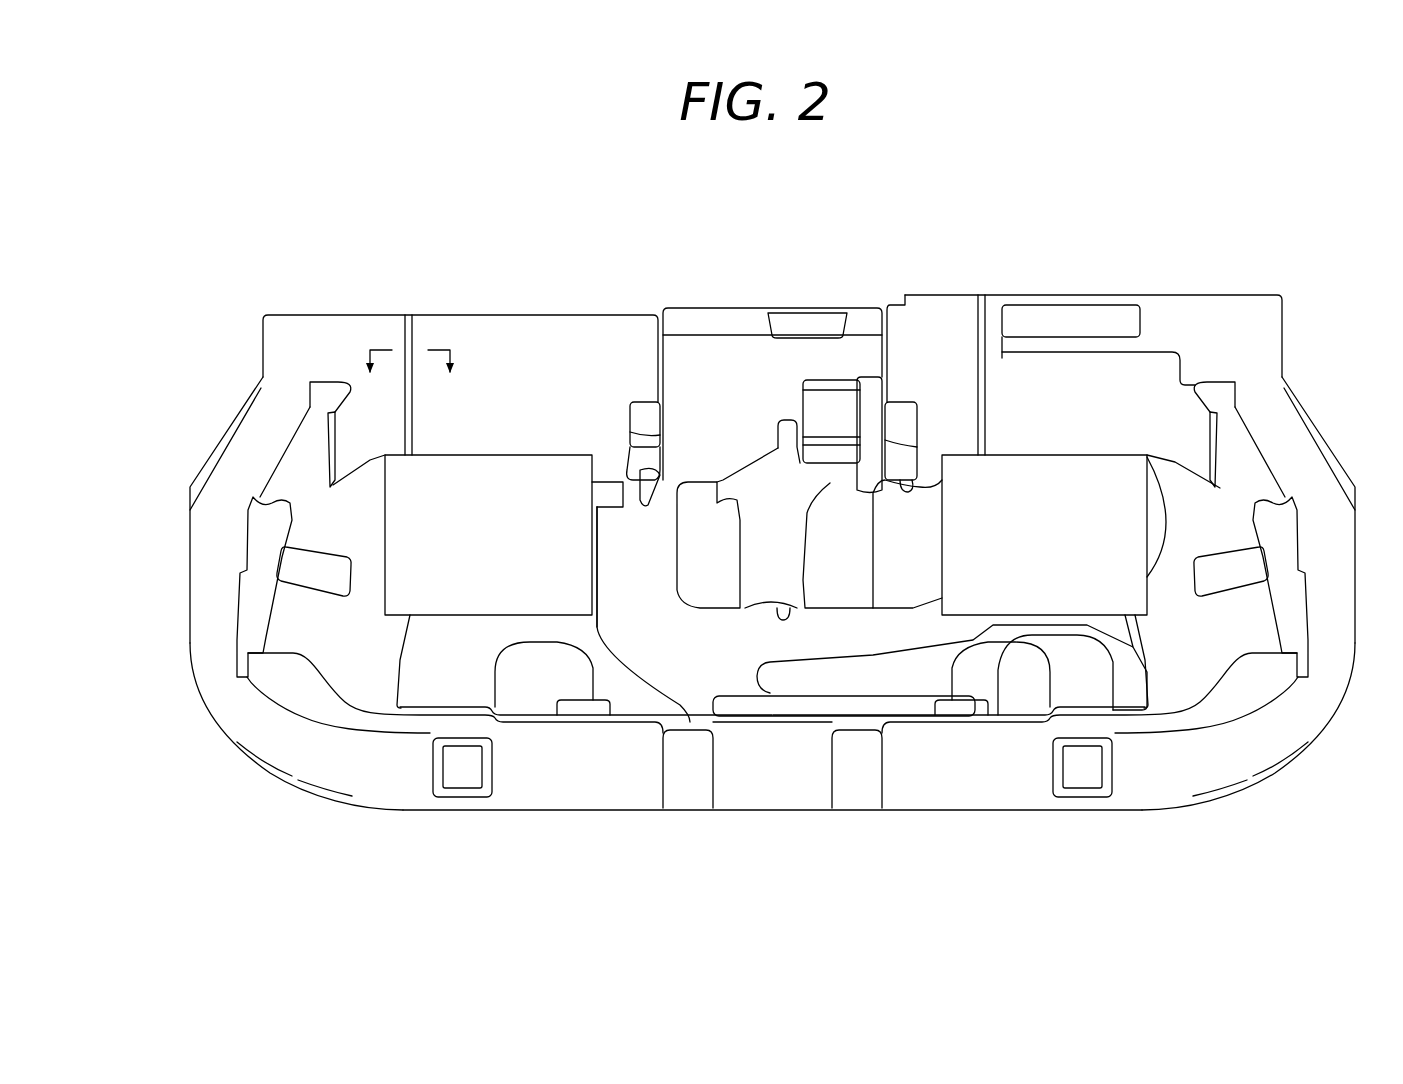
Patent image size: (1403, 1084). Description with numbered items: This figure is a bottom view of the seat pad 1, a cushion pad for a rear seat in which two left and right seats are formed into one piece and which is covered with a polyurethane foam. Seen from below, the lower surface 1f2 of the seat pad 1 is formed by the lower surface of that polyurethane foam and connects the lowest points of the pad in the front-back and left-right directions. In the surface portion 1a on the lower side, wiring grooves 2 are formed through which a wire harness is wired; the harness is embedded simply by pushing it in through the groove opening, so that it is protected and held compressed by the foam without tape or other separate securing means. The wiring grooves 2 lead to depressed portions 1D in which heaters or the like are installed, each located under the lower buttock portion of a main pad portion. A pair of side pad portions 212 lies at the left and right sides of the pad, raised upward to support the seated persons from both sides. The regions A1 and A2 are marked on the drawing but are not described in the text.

The seat pad 1 is at (208, 268).
The wiring groove 2 is at (416, 428).
The depressed portion 1D is at (499, 547).
The first region A1 is at (823, 399).
The second region A2 is at (648, 416).
The surface portion 1a is at (779, 679).
The lower surface 1f2 is at (645, 615).
The side pad portion 212 is at (262, 768).